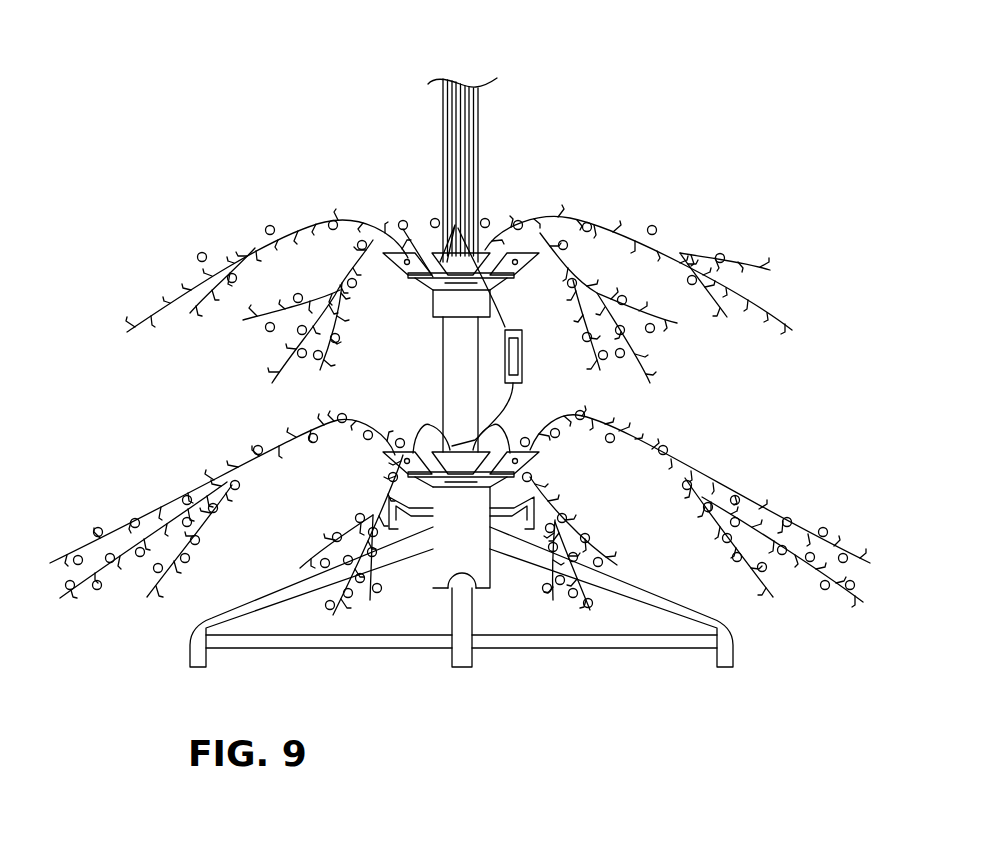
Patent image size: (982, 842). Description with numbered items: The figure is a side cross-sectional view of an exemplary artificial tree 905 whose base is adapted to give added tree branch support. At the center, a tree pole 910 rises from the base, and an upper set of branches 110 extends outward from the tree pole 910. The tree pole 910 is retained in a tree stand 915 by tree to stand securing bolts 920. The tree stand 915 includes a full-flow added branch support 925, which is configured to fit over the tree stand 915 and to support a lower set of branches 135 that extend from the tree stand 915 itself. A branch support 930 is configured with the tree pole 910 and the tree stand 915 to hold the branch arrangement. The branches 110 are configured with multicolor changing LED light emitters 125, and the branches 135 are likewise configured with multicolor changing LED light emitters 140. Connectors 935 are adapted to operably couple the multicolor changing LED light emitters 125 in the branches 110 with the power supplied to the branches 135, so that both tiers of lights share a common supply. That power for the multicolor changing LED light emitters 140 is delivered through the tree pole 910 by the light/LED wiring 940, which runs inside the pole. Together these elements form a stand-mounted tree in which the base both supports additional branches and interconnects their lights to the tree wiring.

The artificial tree 905 is at (240, 92).
The tree pole 910 is at (478, 115).
The light/LED wiring 940 is at (443, 118).
The branch support 930 is at (403, 221).
The connectors 935 is at (540, 312).
The branches 110 is at (513, 225).
The multicolor changing LED light emitters 125 is at (265, 228).
The branches 135 is at (682, 475).
The multicolor changing LED light emitters 140 is at (825, 590).
The tree to stand securing bolts 920 is at (461, 537).
The full-flow added branch support 925 is at (483, 573).
The tree stand 915 is at (190, 648).